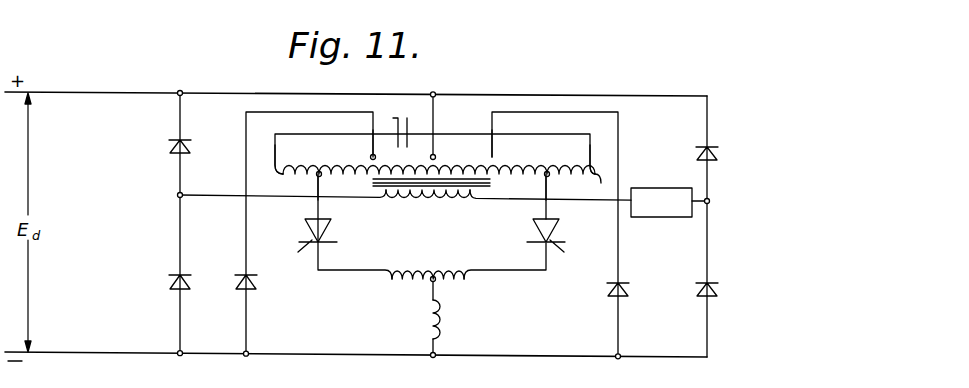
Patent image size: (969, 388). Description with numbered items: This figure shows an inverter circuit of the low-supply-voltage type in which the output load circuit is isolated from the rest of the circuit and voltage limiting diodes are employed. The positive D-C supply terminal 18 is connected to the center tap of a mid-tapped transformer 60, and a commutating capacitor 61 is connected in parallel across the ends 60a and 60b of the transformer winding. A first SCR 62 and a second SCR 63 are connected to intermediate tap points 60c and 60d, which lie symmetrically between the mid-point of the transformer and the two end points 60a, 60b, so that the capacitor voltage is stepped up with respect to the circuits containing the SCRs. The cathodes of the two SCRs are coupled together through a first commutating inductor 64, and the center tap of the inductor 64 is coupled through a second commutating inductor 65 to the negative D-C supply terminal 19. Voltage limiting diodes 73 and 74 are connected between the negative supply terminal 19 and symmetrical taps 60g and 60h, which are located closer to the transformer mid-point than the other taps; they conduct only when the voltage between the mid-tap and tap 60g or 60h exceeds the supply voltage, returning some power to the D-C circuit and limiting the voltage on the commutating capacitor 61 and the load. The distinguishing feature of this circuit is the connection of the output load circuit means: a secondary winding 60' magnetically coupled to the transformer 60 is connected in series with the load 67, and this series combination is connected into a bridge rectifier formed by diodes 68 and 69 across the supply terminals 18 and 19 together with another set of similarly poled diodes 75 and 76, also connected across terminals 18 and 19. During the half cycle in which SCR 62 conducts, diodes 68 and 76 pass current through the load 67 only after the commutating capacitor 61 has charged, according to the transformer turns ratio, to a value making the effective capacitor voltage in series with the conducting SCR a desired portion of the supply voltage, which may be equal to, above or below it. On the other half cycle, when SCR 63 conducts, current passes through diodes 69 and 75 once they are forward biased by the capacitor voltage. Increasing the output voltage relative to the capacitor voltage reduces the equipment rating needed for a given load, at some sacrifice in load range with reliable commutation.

The positive D-C supply terminal 18 is at (70, 92).
The negative D-C supply terminal 19 is at (48, 352).
The mid-tapped transformer 60 is at (439, 154).
The one end of the transformer winding 60a is at (284, 168).
The other end of the transformer winding 60b is at (591, 172).
The intermediate tap point 60c is at (318, 174).
The intermediate tap point 60d is at (526, 187).
The symmetrical tap 60g is at (370, 155).
The symmetrical tap 60h is at (511, 144).
The secondary winding 60' is at (428, 209).
The commutating capacitor 61 is at (405, 122).
The first SCR 62 is at (328, 228).
The second SCR 63 is at (553, 231).
The first commutating inductor 64 is at (425, 263).
The second commutating inductor 65 is at (441, 326).
The load 67 is at (661, 187).
The diode 68 is at (171, 147).
The diode 69 is at (175, 284).
The voltage limiting diode 73 is at (242, 284).
The voltage limiting diode 74 is at (628, 289).
The diode 75 is at (717, 153).
The diode 76 is at (717, 289).